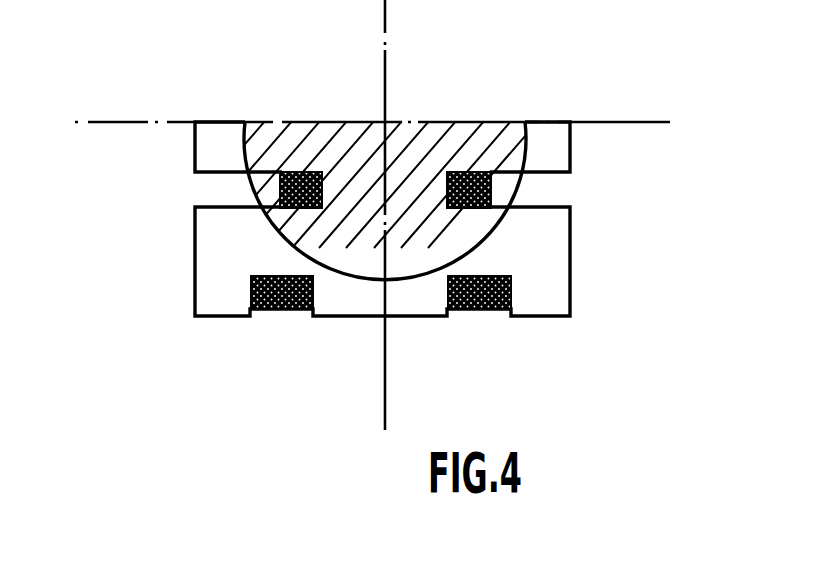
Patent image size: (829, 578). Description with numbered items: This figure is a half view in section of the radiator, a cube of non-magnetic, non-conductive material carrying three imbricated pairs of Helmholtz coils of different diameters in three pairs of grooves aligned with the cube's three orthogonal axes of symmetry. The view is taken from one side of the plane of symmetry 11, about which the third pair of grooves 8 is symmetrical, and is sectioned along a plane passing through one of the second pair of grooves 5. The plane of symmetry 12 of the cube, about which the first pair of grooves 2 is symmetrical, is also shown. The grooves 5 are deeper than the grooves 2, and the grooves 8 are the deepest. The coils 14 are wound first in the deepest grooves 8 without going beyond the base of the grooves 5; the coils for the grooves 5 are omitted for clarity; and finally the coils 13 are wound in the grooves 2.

The first pair of grooves 2 is at (292, 277).
The second pair of grooves 5 is at (297, 215).
The third pair of grooves 8 is at (543, 173).
The plane of symmetry 11 is at (140, 122).
The plane of symmetry 12 is at (387, 15).
The coils 13 is at (478, 310).
The coils 14 is at (280, 183).